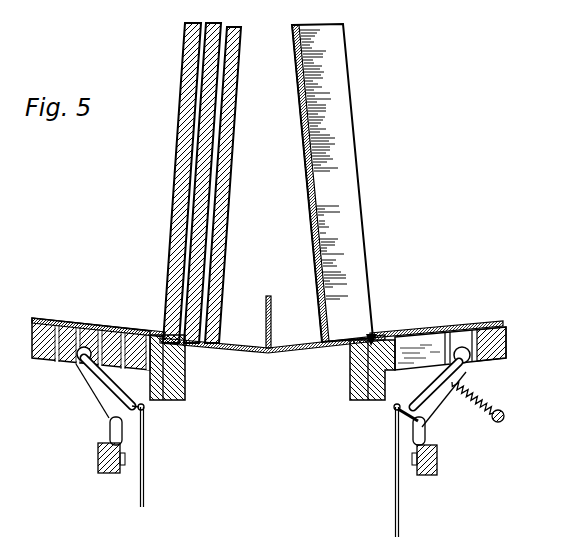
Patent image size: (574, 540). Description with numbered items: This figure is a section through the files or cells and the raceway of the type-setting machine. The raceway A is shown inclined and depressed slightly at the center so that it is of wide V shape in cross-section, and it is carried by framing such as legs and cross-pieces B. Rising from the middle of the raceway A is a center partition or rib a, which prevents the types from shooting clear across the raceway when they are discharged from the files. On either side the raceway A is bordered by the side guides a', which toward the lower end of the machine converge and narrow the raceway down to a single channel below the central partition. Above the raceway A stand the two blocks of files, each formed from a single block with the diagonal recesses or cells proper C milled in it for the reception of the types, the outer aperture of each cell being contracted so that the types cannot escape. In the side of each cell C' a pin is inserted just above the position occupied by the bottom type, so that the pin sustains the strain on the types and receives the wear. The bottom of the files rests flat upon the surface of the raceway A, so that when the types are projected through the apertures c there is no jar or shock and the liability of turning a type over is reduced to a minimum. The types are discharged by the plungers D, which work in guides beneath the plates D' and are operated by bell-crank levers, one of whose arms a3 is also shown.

The cells C is at (263, 184).
The cell C' is at (174, 117).
The apertures c is at (331, 344).
The raceway A is at (279, 353).
The plungers D is at (269, 333).
The plates D' is at (267, 315).
The legs and cross-pieces B is at (185, 400).
The center partition or rib a is at (282, 356).
The side guides a' is at (267, 470).
The lever arm a3 is at (491, 322).